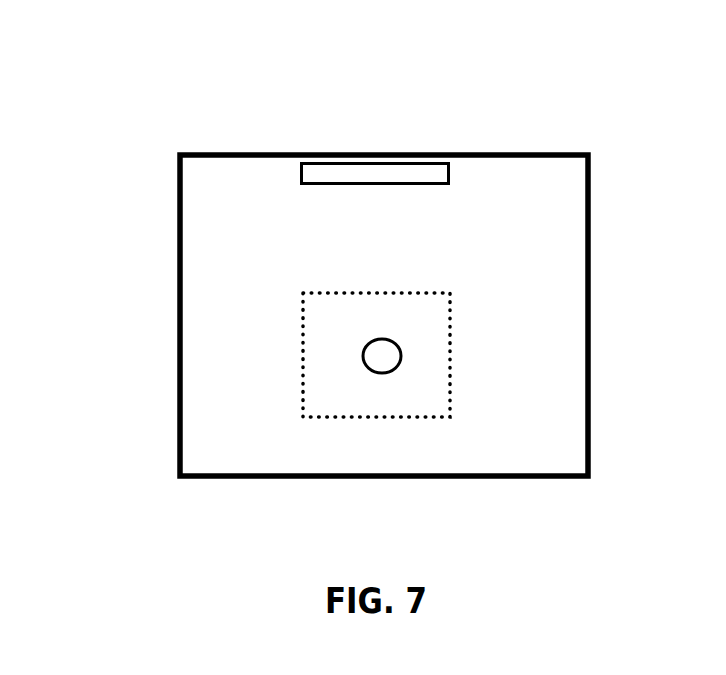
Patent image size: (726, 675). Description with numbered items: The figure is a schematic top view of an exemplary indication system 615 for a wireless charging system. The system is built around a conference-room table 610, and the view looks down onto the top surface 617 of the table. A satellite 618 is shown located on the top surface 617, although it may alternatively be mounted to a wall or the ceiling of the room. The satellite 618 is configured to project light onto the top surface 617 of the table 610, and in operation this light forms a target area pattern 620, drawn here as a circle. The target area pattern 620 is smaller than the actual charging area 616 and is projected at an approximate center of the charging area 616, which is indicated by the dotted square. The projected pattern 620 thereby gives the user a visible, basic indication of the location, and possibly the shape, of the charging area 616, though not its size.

The conference-room table 610 is at (258, 152).
The indication system 615 is at (478, 60).
The charging area 616 is at (450, 348).
The top surface 617 is at (253, 192).
The satellite 618 is at (450, 176).
The target area pattern 620 is at (363, 350).